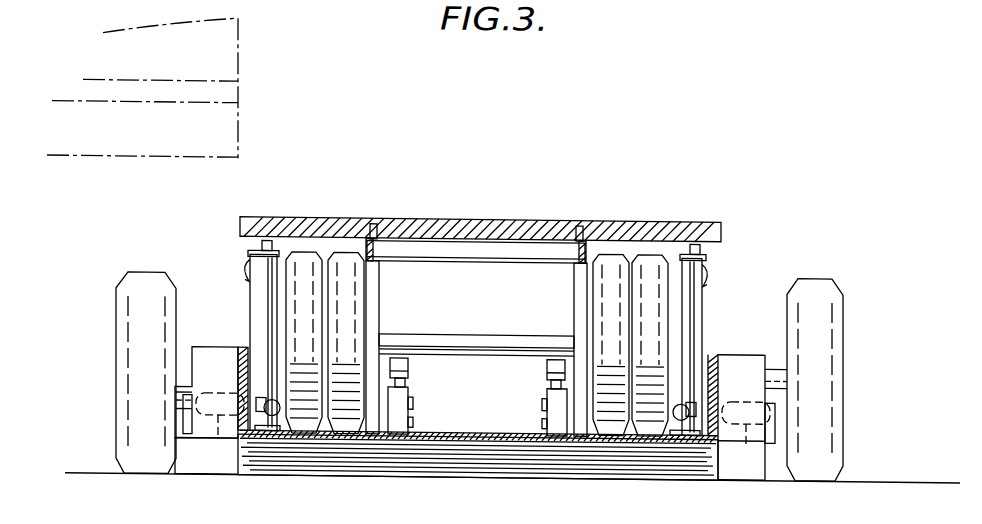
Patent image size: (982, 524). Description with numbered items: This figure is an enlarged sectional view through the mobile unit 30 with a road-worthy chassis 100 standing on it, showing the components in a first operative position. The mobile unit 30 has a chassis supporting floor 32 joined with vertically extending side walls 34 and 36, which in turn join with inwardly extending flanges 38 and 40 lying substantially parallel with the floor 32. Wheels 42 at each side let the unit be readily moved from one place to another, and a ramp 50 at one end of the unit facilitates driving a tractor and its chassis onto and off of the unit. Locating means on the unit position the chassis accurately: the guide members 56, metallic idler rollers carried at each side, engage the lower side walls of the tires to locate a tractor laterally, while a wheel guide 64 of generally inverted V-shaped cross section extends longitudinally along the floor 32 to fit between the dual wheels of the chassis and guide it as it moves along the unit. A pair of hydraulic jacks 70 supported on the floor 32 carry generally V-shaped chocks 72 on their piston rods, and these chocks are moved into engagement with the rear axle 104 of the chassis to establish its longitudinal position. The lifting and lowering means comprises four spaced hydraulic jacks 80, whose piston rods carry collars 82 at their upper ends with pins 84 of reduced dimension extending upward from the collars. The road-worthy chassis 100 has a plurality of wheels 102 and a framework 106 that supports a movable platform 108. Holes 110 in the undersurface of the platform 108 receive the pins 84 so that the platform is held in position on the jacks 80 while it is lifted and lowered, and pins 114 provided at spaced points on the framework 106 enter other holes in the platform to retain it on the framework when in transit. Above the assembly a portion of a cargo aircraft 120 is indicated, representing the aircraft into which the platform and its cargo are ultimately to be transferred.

The mobile unit 30 is at (720, 456).
The floor 32 is at (476, 390).
The side wall 34 is at (211, 392).
The side wall 36 is at (716, 396).
The flange 38 is at (280, 353).
The flange 40 is at (690, 358).
The wheels 42 is at (124, 322).
The ramp 50 is at (483, 440).
The guide members 56 is at (477, 457).
The wheel guide 64 is at (628, 440).
The hydraulic jacks 70 is at (418, 412).
The V-shaped chocks 72 is at (410, 367).
The hydraulic jacks 80 is at (262, 311).
The collars 82 is at (252, 264).
The pins 84 is at (258, 248).
The road-worthy chassis 100 is at (608, 215).
The wheels 102 is at (350, 318).
The rear axle 104 is at (486, 348).
The framework 106 is at (430, 219).
The platform 108 is at (477, 219).
The holes 110 is at (283, 228).
The pins 114 is at (372, 228).
The cargo aircraft 120 is at (240, 159).